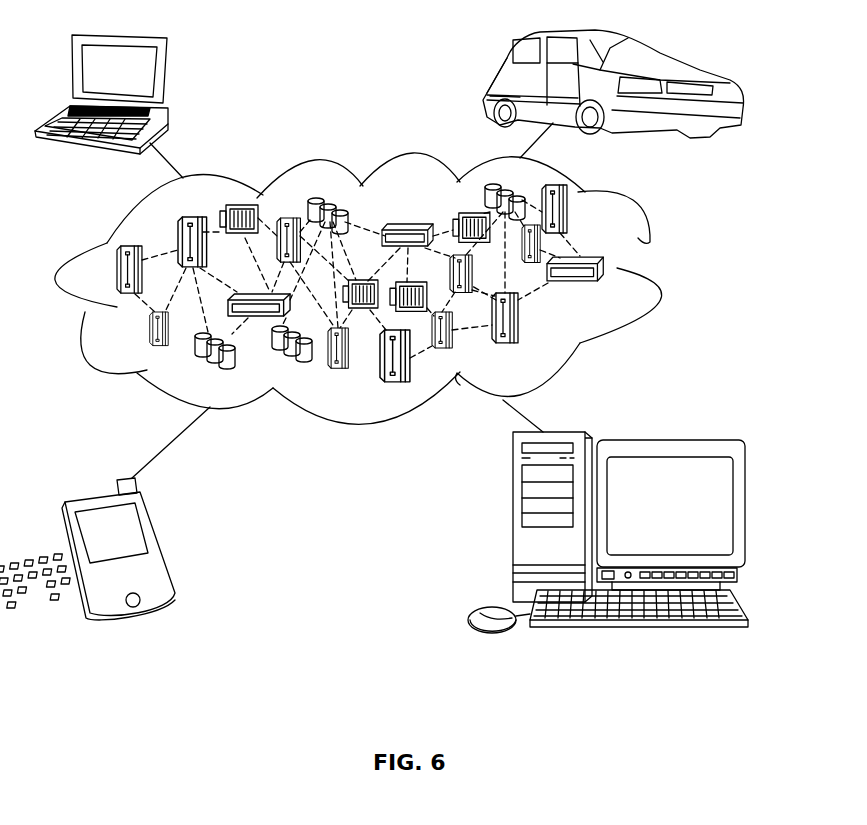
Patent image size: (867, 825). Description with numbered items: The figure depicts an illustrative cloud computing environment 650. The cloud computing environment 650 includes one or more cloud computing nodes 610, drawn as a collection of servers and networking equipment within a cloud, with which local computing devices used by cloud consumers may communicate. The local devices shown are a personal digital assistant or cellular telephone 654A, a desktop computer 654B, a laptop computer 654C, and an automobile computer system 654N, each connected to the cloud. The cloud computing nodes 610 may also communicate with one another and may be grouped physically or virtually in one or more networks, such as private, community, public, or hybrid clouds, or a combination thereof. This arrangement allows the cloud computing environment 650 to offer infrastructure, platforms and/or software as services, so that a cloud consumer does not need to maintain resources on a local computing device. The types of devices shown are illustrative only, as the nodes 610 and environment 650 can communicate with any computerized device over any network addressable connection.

The cloud computing environment 650 is at (638, 238).
The cloud computing nodes 610 is at (620, 287).
The personal digital assistant (PDA) or cellular telephone 654A is at (160, 543).
The desktop computer 654B is at (513, 527).
The laptop computer 654C is at (163, 73).
The automobile computer system 654N is at (488, 82).